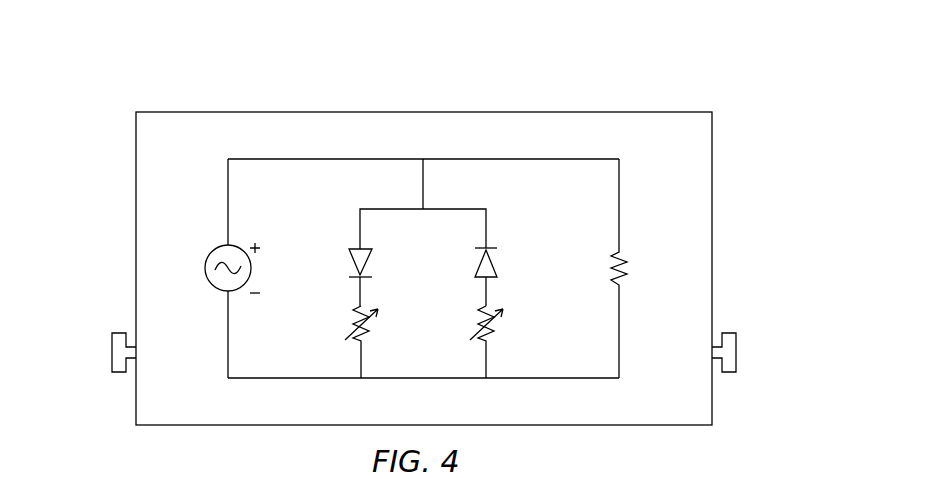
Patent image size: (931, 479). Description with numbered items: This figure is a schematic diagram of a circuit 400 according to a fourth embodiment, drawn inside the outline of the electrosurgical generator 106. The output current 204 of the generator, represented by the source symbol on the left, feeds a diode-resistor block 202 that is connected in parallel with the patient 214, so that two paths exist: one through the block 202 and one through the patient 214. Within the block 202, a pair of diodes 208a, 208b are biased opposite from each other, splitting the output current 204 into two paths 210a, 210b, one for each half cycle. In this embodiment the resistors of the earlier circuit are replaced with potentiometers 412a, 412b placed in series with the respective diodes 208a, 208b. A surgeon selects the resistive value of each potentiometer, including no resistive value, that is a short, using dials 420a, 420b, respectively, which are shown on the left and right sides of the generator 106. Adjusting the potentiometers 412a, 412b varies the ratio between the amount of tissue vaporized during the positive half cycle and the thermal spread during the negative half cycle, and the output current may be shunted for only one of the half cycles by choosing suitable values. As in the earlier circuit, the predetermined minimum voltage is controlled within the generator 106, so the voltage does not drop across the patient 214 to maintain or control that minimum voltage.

The circuit 400 is at (453, 91).
The electrosurgical generator 106 is at (712, 250).
The diode-resistor block 202 is at (485, 199).
The output current 204 is at (252, 270).
The diode 208a is at (349, 262).
The diode 208b is at (498, 265).
The path 210a is at (393, 209).
The path 210b is at (437, 209).
The patient 214 is at (625, 262).
The potentiometer 412a is at (367, 330).
The potentiometer 412b is at (493, 335).
The dial 420a is at (112, 350).
The dial 420b is at (738, 352).